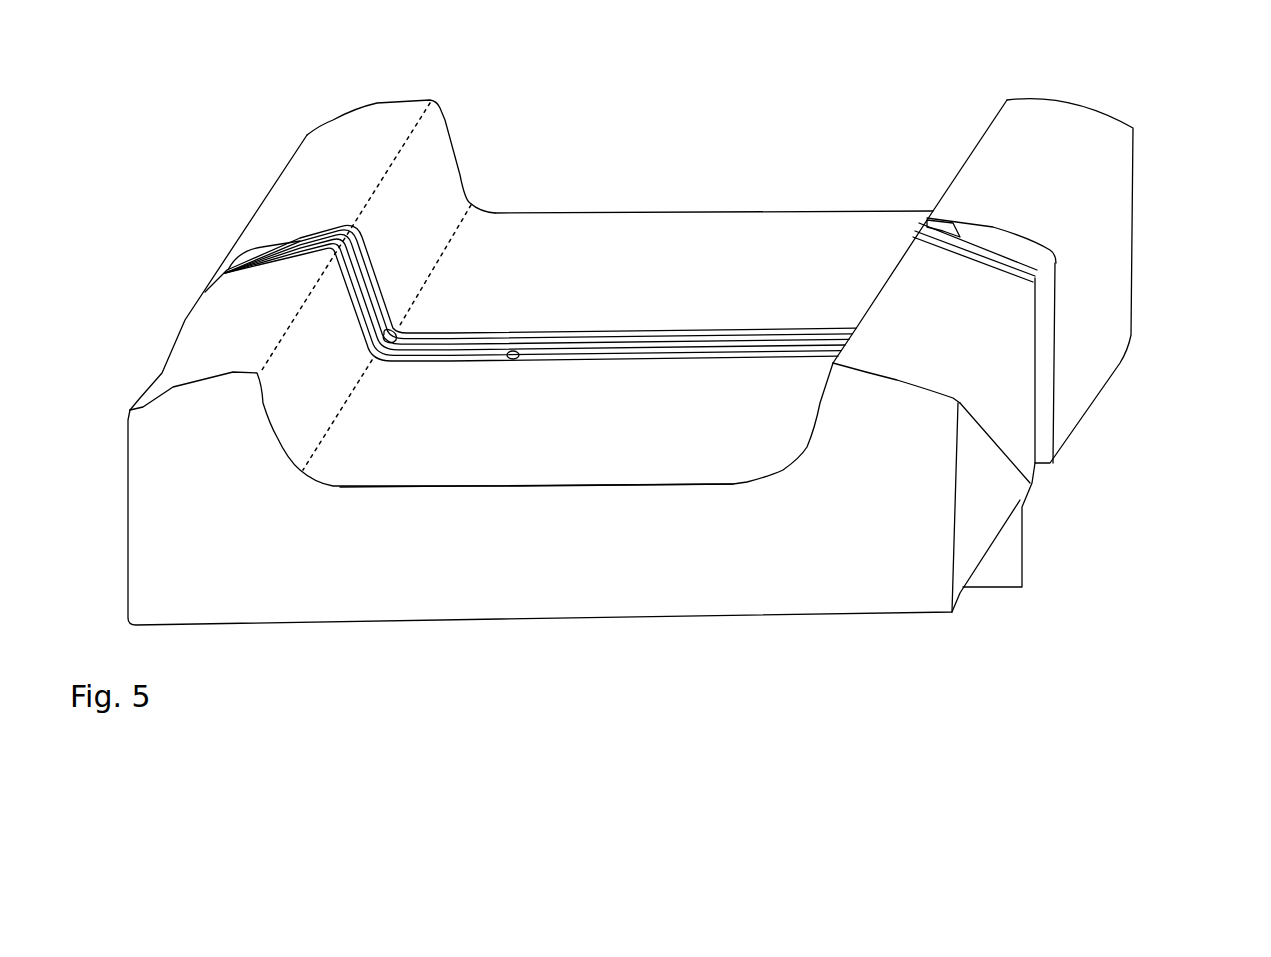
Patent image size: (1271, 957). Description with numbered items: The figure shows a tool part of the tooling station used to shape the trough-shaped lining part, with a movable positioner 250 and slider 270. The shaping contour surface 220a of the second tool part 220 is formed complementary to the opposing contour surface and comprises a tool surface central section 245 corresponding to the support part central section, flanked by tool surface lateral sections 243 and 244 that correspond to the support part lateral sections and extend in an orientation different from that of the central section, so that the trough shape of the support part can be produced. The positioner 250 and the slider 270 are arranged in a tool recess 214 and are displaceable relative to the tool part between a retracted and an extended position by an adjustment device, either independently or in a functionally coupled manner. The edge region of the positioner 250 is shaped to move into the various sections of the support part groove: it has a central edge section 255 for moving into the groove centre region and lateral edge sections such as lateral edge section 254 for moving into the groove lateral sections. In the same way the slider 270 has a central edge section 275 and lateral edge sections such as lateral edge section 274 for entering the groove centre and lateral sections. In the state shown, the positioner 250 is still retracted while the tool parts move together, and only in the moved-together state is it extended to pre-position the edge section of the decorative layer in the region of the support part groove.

The second tool part 220 is at (1103, 97).
The second shaping contour surface 220a is at (680, 250).
The tool surface lateral section 244 is at (431, 186).
The tool surface lateral section 243 is at (815, 404).
The tool surface central section 245 is at (619, 434).
The tool recess 214 is at (998, 238).
The positioner 250 is at (347, 220).
The lateral edge section 254 is at (363, 267).
The central edge section 255 is at (460, 338).
The slider 270 is at (273, 247).
The lateral edge section 274 is at (366, 302).
The central edge section 275 is at (517, 358).